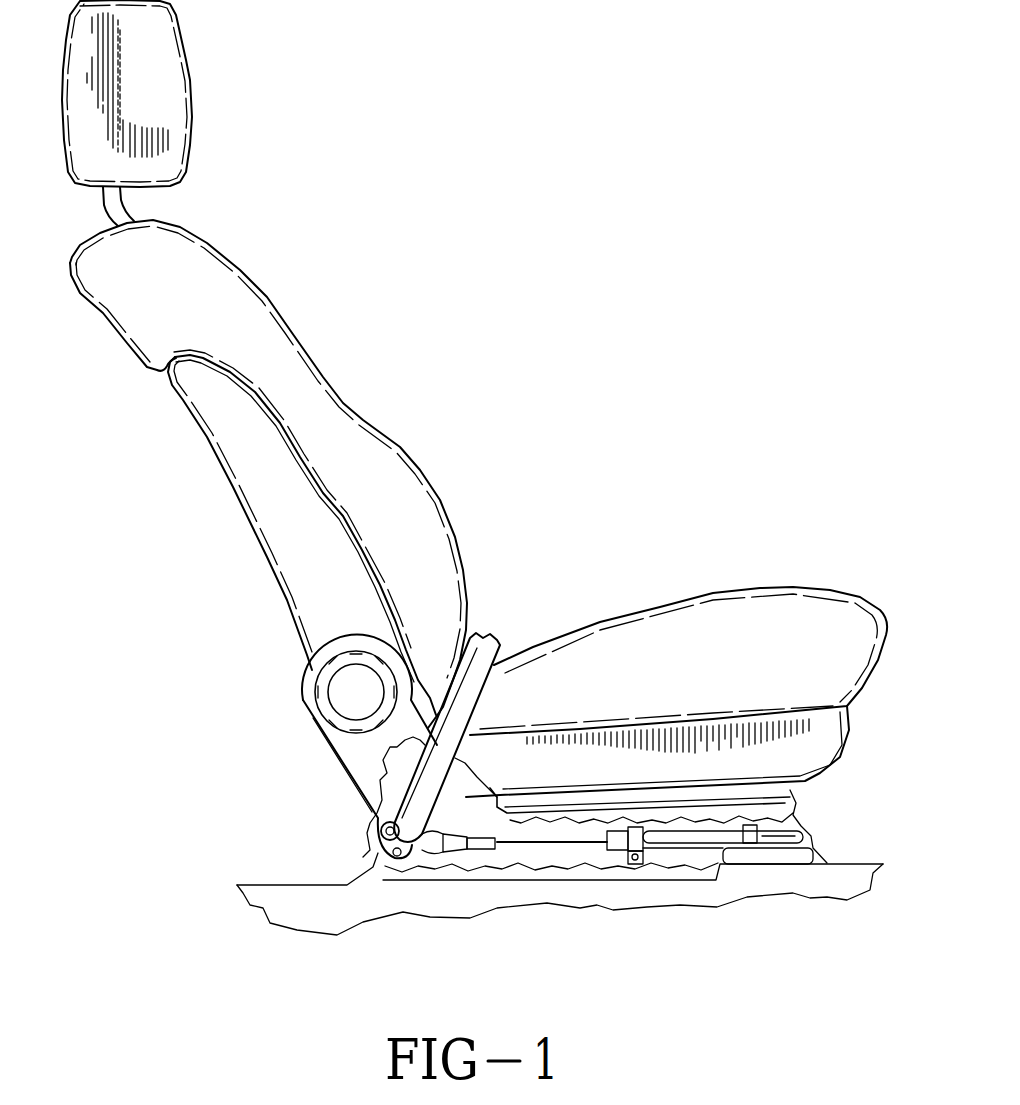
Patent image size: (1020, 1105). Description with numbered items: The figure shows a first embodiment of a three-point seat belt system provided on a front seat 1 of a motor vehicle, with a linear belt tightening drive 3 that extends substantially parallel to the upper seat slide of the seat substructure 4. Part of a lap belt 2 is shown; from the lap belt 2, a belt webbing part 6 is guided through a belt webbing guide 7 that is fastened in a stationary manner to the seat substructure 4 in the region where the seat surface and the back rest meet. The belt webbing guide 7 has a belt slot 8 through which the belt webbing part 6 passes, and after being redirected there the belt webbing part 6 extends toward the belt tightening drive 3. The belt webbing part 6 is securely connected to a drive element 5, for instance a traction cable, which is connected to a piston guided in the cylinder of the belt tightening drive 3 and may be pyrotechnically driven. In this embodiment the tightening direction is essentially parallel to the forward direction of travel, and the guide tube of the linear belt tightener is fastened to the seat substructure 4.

The front seat 1 is at (718, 576).
The lap belt 2 is at (470, 697).
The belt tightening drive 3 is at (698, 837).
The seat substructure 4 is at (777, 818).
The drive element 5 is at (555, 845).
The belt webbing part 6 is at (438, 847).
The belt webbing guide 7 is at (385, 840).
The belt slot 8 is at (407, 837).